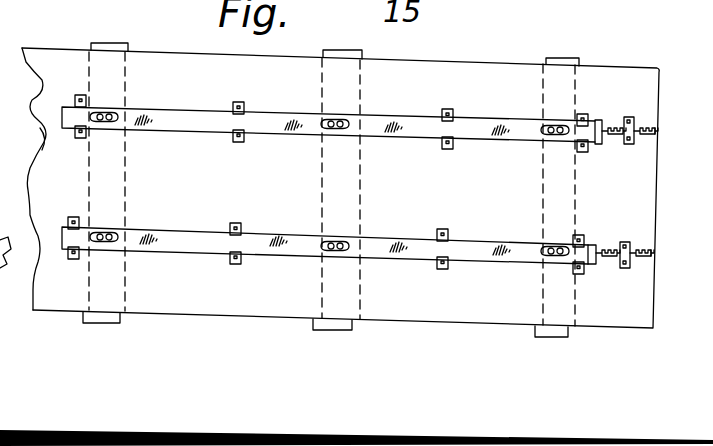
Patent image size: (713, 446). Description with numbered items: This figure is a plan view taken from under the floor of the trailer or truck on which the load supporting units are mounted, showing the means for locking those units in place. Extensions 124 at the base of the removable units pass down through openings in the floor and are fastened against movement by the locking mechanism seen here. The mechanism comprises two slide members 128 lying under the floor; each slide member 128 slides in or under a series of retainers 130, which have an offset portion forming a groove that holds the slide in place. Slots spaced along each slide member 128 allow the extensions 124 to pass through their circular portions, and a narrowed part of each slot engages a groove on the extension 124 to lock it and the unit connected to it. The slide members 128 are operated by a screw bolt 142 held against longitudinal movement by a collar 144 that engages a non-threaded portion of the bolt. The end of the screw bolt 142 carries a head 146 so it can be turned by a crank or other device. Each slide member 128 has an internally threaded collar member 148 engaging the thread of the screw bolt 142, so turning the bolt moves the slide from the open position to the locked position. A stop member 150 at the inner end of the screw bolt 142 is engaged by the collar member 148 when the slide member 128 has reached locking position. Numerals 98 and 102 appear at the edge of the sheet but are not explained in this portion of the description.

The extension 124 is at (113, 119).
The slide member 128 is at (418, 103).
The retainer 130 is at (242, 131).
The screw bolt 142 is at (640, 140).
The collar 144 is at (634, 118).
The head 146 is at (655, 130).
The collar member 148 is at (596, 148).
The stop member 150 is at (592, 130).
The member 98 is at (8, 99).
The member 102 is at (22, 139).